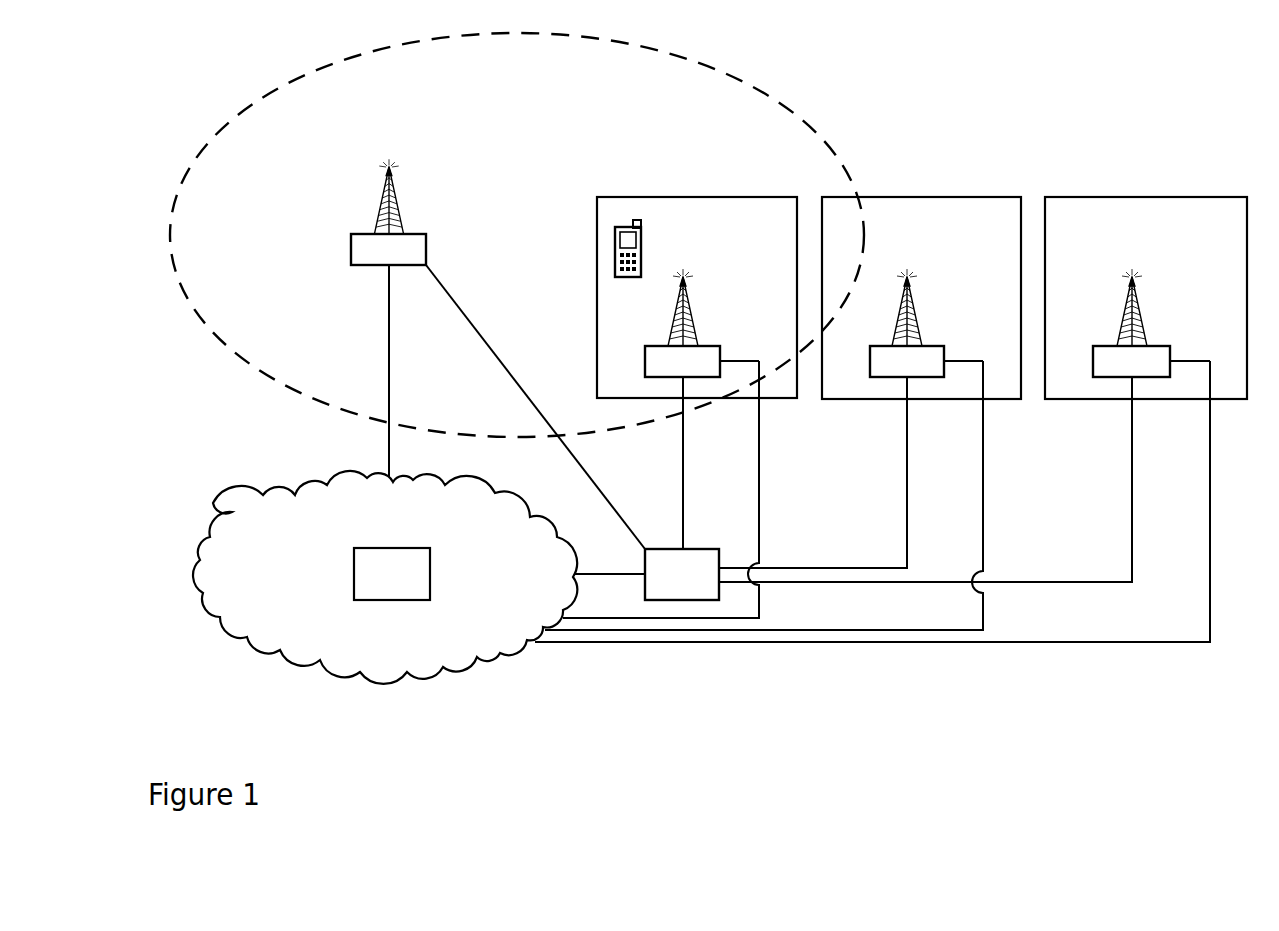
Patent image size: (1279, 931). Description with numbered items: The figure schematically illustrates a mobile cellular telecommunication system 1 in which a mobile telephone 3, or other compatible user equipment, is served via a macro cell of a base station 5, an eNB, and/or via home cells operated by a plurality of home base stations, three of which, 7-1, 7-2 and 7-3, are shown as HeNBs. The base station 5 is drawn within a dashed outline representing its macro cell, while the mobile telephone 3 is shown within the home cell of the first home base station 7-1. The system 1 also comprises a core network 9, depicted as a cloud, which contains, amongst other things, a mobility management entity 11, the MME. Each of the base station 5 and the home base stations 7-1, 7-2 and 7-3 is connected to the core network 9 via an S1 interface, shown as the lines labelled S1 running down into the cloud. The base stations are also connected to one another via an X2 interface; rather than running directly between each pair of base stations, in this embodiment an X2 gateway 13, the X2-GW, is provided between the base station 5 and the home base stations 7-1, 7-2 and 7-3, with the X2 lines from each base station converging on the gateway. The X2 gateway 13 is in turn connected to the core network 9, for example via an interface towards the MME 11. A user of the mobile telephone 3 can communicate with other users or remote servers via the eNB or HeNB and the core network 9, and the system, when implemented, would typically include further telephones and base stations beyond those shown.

The mobile telecommunication system 1 is at (906, 681).
The mobile telephone 3 is at (614, 238).
The base station 5 is at (351, 240).
The home base station 7-1 is at (704, 345).
The home base station 7-2 is at (929, 345).
The home base station 7-3 is at (1154, 345).
The core network 9 is at (277, 492).
The mobility management entity 11 is at (408, 548).
The X2 gateway 13 is at (698, 549).